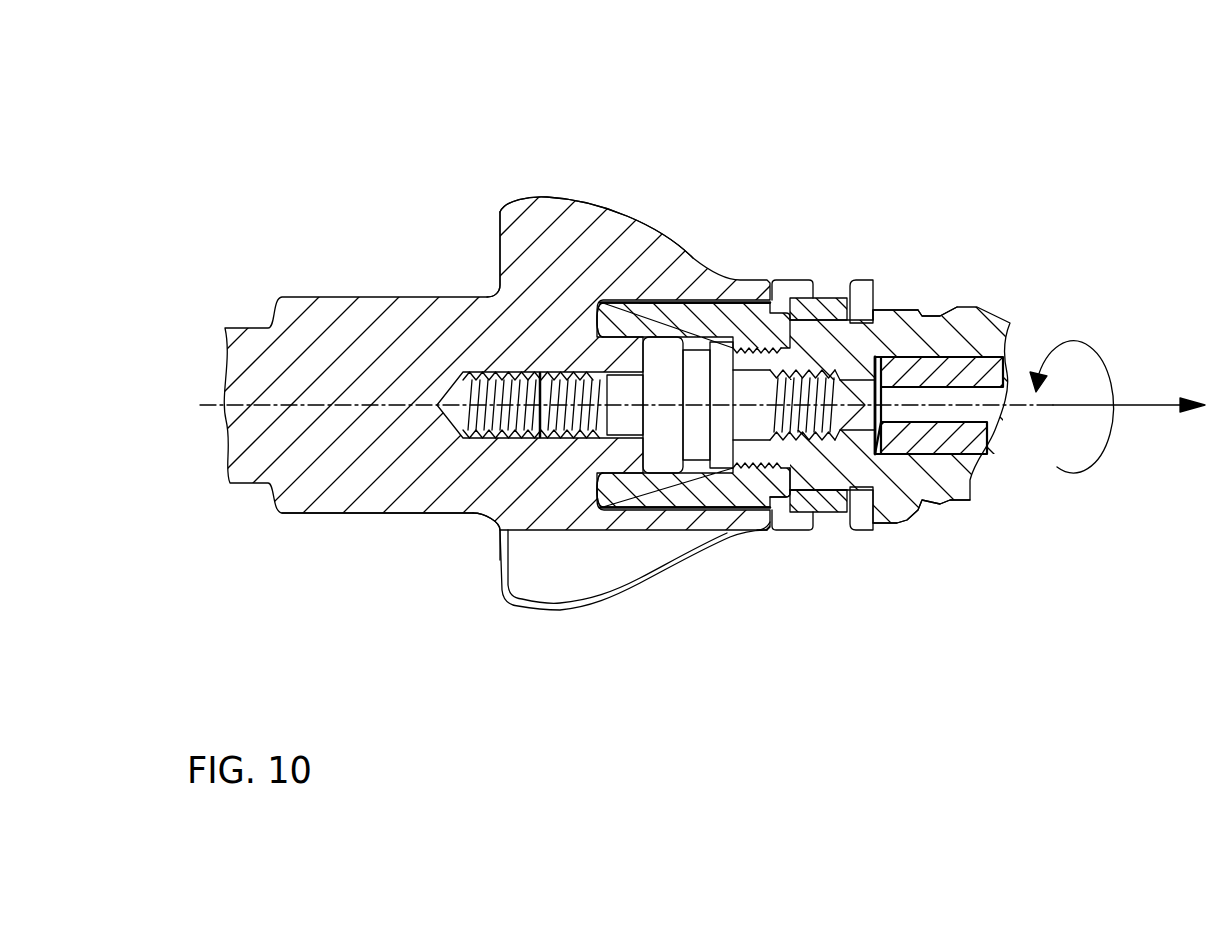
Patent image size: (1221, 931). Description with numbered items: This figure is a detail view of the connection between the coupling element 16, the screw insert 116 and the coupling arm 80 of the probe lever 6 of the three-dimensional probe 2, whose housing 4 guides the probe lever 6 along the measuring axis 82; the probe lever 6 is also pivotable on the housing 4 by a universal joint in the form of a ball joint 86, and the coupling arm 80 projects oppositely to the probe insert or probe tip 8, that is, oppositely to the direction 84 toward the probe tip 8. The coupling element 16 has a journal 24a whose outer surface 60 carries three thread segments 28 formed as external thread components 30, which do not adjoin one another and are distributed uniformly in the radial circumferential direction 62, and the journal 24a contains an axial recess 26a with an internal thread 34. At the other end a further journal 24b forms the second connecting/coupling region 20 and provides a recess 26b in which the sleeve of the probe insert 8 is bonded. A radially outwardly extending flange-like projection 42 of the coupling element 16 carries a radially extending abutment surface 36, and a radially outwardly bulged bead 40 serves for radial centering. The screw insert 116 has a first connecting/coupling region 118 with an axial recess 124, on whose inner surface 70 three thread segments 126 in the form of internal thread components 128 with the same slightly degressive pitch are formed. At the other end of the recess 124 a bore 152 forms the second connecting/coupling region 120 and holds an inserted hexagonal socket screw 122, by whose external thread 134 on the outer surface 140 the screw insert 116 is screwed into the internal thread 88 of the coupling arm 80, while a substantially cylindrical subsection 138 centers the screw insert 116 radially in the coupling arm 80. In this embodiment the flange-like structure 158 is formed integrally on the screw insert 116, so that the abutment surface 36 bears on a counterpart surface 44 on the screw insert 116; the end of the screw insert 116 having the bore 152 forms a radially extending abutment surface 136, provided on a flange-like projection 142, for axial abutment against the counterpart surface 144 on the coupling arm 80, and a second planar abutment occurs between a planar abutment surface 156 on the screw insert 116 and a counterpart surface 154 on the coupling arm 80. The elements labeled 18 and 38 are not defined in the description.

The 3D probe 2 is at (671, 326).
The housing 4 is at (671, 326).
The probe lever 6 is at (1050, 130).
The probe insert 8 is at (896, 424).
The coupling element 16 is at (893, 508).
The first clamping part 18 is at (776, 550).
The second connecting/coupling region 20 is at (896, 424).
The journal 24a is at (800, 470).
The further journal 24b is at (975, 328).
The axial recess 26a is at (653, 317).
The recess 26b is at (965, 455).
The thread segments 28 is at (773, 525).
The external thread components 30 is at (760, 478).
The internal thread 34 is at (793, 460).
The abutment surface 36 is at (920, 307).
The locking nut 38 is at (844, 335).
The bead 40 is at (835, 318).
The flange-like projection 42 is at (905, 318).
The counterpart surface 44 is at (862, 283).
The outer surface 60 is at (723, 307).
The radial circumferential direction 62 is at (1087, 465).
The inner surface 70 is at (624, 509).
The coupling arm 80 is at (601, 605).
The measuring axis 82 is at (225, 405).
The direction 84 is at (1162, 407).
The ball joint 86 is at (560, 600).
The internal thread 88 is at (545, 425).
The screw insert 116 is at (723, 355).
The first connecting/coupling region 118 is at (600, 528).
The second connecting/coupling region 120 is at (553, 405).
The hexagonal socket screw 122 is at (553, 405).
The axial recess 124 is at (672, 482).
The thread segments 126 is at (710, 306).
The internal thread components 128 is at (797, 325).
The external thread 134 is at (260, 483).
The abutment surface 136 is at (598, 337).
The cylindrical subsection 138 is at (745, 497).
The outer surface 140 is at (585, 400).
The flange-like projection 142 is at (653, 482).
The counterpart surface 144 is at (612, 323).
The bore 152 is at (387, 515).
The counterpart surface 154 is at (770, 518).
The planar abutment surface 156 is at (787, 320).
The flange-like structure 158 is at (858, 505).